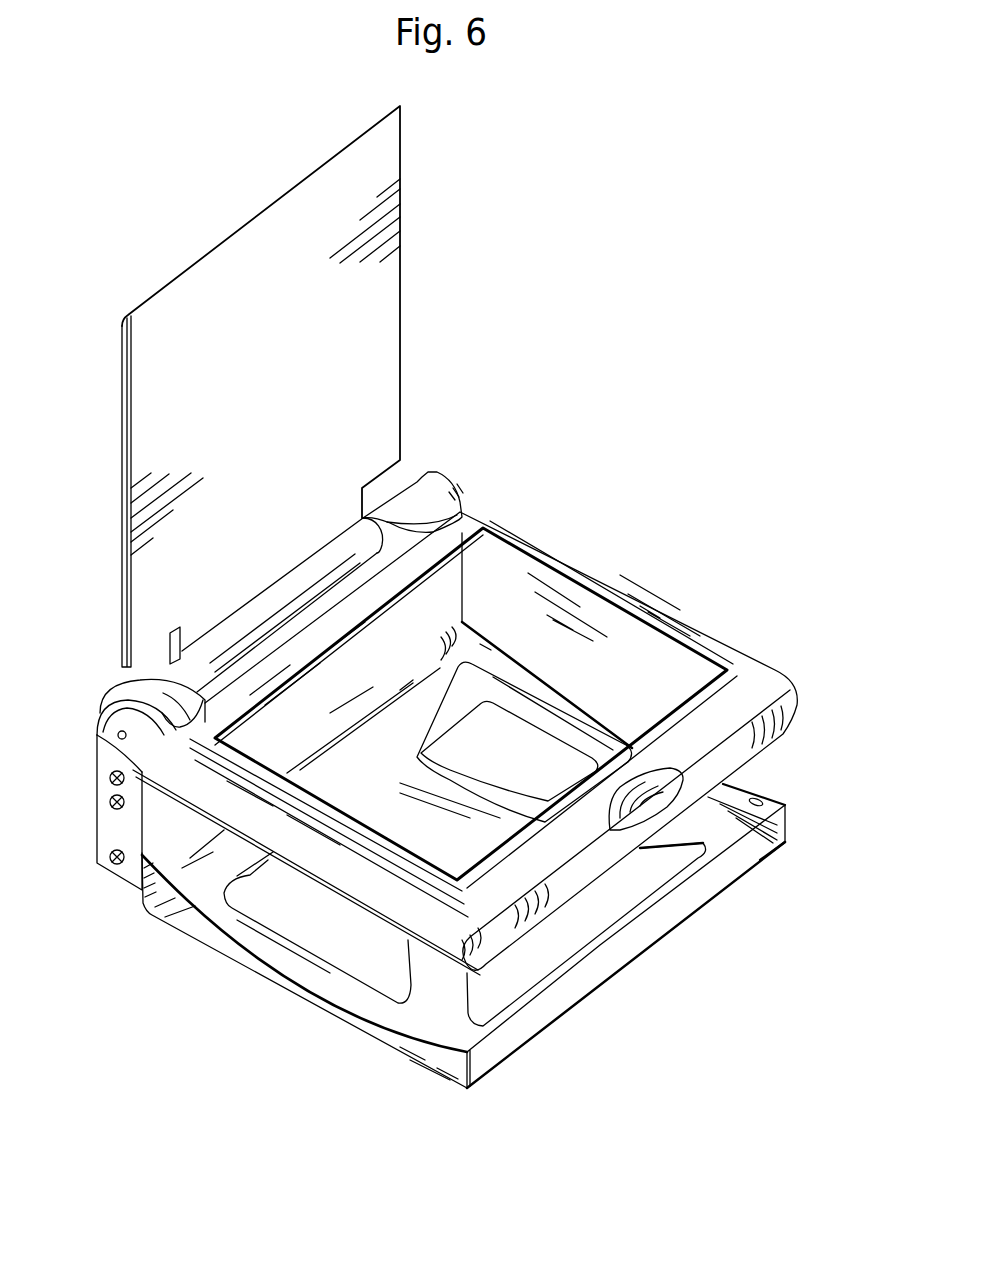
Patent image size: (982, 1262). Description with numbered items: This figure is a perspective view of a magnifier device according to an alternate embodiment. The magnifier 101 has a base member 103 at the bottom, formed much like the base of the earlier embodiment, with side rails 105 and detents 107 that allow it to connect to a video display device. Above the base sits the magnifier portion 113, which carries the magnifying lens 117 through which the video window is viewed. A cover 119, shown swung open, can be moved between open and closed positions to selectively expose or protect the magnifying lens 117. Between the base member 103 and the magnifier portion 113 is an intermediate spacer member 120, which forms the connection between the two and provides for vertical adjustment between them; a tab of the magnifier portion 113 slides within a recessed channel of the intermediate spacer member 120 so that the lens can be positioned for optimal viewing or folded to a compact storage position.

The magnifier 101 is at (598, 432).
The base member 103 is at (700, 895).
The side rails 105 is at (786, 810).
The detents 107 is at (768, 793).
The magnifier portion 113 is at (800, 668).
The magnifying lens 117 is at (607, 642).
The cover 119 is at (122, 400).
The intermediate spacer member 120 is at (103, 825).